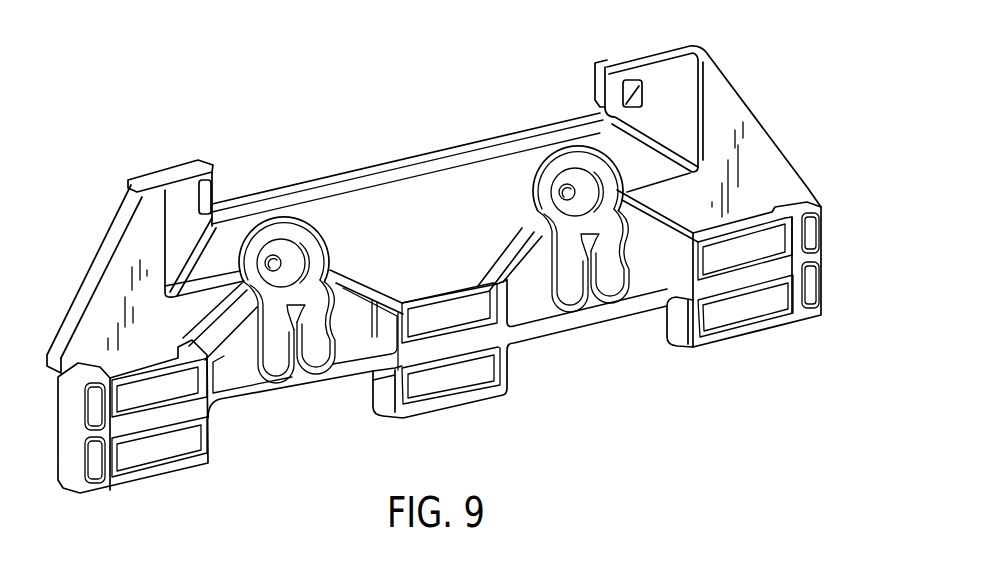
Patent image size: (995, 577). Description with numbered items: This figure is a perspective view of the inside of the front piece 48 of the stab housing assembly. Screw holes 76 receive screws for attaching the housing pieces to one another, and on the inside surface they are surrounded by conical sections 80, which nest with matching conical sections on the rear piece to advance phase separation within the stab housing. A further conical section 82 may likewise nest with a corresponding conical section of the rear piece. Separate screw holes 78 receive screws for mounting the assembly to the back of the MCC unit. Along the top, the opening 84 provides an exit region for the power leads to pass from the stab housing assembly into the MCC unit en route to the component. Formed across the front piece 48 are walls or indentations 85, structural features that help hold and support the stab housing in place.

The front piece 48 is at (772, 73).
The opening 84 is at (418, 126).
The conical section 82 is at (322, 280).
The screw holes 78 is at (272, 256).
The screw holes 76 is at (296, 355).
The conical sections 80 is at (271, 353).
The walls or indentations 85 is at (152, 383).